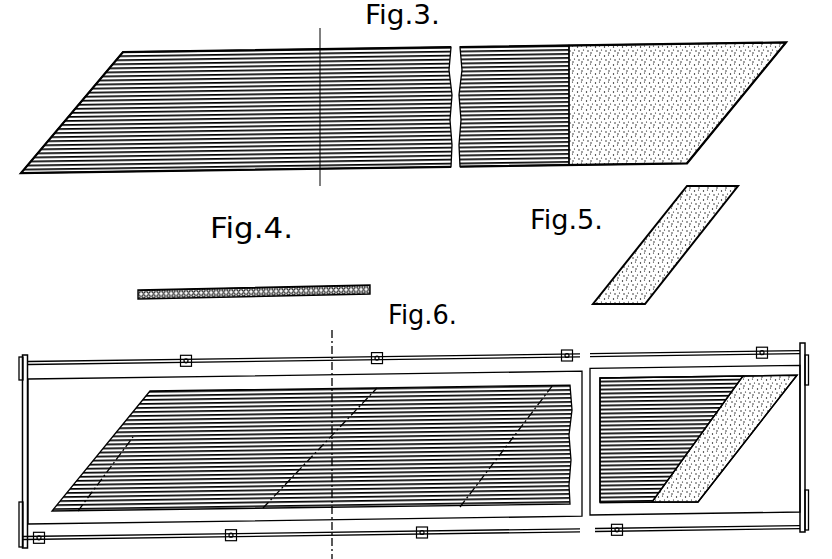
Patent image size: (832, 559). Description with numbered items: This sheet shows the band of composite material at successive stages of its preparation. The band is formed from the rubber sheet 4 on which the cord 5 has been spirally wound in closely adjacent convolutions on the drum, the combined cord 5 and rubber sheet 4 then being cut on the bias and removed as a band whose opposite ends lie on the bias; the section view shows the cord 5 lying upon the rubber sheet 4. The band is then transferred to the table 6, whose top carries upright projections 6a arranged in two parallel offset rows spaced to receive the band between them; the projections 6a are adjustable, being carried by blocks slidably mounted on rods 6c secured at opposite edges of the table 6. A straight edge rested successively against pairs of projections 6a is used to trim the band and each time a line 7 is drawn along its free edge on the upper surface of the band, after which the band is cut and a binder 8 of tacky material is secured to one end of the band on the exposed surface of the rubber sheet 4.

In FIG. 3, the rubber sheet 4 is at (641, 27).
In FIG. 4, the rubber sheet 4 is at (250, 298).
In FIG. 3, the cord 5 is at (396, 151).
In FIG. 4, the cord 5 is at (203, 290).
In FIG. 6, the cord 5 is at (272, 398).
In FIG. 6, the table 6 is at (79, 385).
In FIG. 6, the upright projections 6a is at (192, 358).
In FIG. 6, the rods 6c is at (502, 550).
In FIG. 6, the line 7 is at (107, 417).
In FIG. 5, the binder 8 is at (677, 253).
In FIG. 6, the binder 8 is at (712, 472).